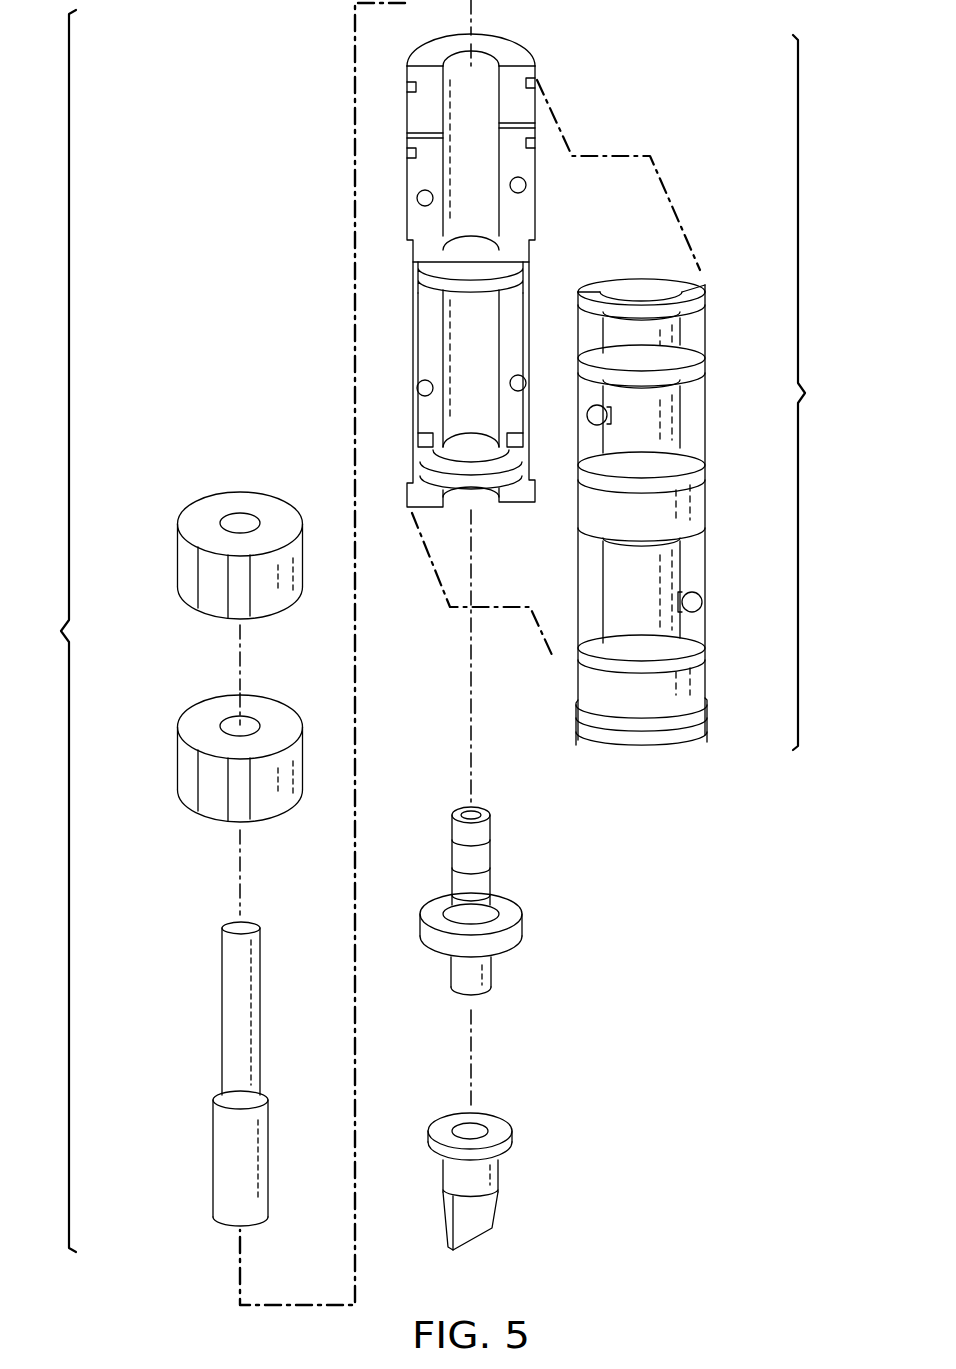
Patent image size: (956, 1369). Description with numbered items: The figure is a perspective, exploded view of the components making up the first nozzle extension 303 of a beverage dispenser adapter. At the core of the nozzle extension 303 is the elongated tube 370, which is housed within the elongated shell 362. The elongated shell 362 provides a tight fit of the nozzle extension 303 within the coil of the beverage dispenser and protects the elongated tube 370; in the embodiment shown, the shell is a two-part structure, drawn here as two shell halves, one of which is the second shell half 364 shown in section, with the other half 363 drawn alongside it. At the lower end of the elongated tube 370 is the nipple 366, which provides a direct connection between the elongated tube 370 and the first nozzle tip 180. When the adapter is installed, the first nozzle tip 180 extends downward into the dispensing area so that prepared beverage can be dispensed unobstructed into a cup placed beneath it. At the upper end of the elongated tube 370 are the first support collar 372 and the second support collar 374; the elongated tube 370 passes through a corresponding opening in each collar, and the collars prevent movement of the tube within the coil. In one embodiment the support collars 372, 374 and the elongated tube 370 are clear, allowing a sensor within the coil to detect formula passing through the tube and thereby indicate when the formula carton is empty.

The first nozzle extension 303 is at (207, 654).
The elongated shell 362 is at (827, 392).
The outer housing sleeve 363 is at (704, 491).
The second shell half 364 is at (533, 212).
The nipple 366 is at (519, 951).
The elongated tube 370 is at (222, 1008).
The first support collar 372 is at (178, 757).
The second support collar 374 is at (178, 553).
The first nozzle tip 180 is at (495, 1207).